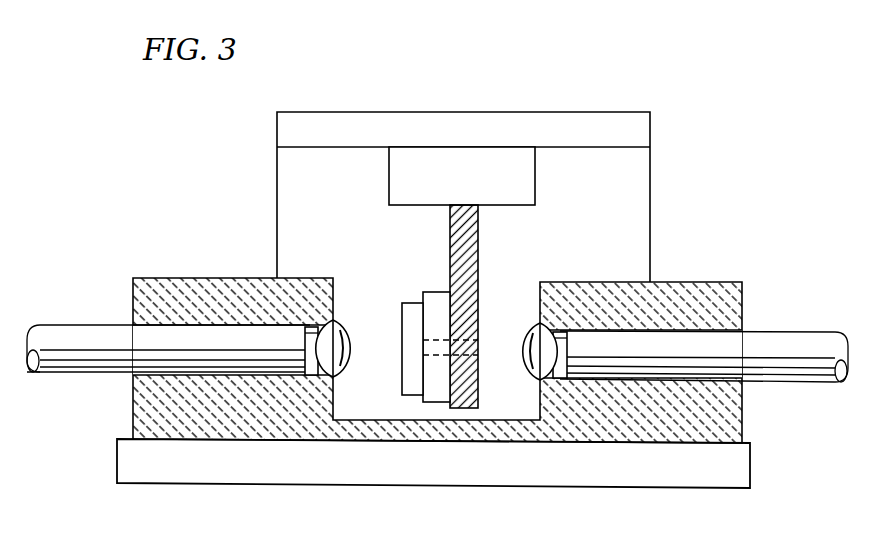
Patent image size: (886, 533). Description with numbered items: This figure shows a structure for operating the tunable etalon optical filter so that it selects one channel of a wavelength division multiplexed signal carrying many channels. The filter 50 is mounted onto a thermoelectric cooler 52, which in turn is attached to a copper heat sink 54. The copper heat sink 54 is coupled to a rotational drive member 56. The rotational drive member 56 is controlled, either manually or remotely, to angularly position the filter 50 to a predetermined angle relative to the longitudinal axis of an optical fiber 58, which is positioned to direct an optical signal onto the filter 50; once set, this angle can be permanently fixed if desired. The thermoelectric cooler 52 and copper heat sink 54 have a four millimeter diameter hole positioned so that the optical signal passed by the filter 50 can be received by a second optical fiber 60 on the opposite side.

The filter 50 is at (403, 303).
The thermoelectric cooler 52 is at (437, 292).
The copper heat sink 54 is at (478, 256).
The rotational drive member 56 is at (535, 191).
The optical fiber 58 is at (88, 325).
The optical fiber 60 is at (790, 332).